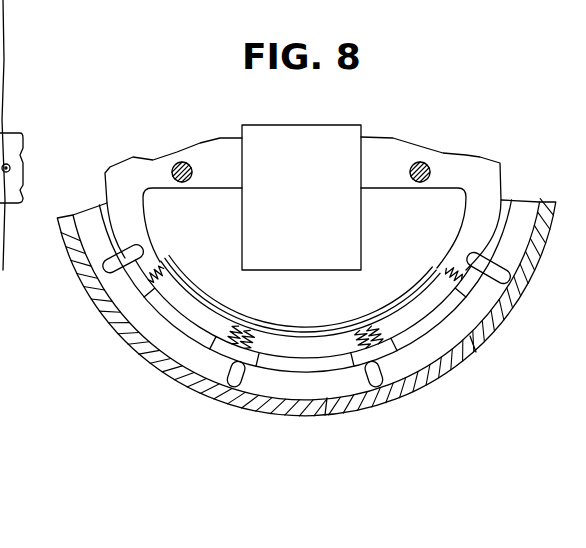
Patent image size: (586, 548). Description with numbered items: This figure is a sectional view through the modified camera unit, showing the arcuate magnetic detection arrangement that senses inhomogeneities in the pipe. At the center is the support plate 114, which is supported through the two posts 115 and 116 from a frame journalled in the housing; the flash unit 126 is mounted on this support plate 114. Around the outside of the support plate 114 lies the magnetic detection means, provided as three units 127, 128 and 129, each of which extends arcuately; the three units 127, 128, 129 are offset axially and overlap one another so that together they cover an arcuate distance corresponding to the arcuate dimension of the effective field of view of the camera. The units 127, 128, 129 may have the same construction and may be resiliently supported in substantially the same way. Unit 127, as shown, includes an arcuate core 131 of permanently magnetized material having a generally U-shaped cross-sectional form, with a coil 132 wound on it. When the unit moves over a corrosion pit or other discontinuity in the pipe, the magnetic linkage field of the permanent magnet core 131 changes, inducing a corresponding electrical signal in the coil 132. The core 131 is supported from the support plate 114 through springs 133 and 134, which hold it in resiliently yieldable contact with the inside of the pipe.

The support plate 114 is at (487, 173).
The post 115 is at (187, 162).
The post 116 is at (428, 160).
The flash unit 126 is at (358, 242).
The magnetic detection unit 127 is at (163, 365).
The magnetic detection unit 128 is at (325, 415).
The magnetic detection unit 129 is at (480, 347).
The arcuate core 131 is at (147, 325).
The coil 132 is at (110, 290).
The spring 133 is at (80, 275).
The spring 134 is at (208, 347).